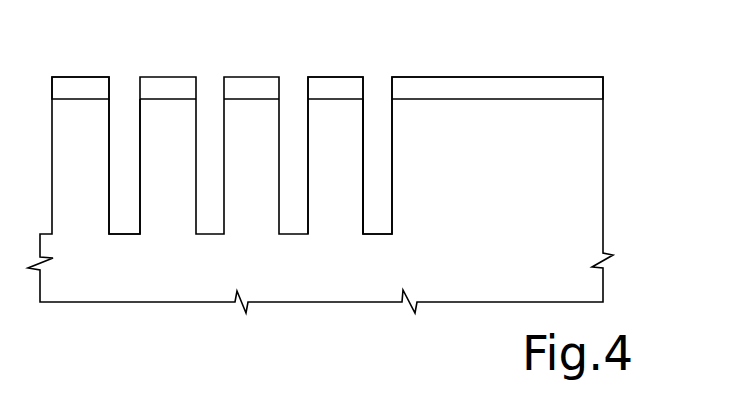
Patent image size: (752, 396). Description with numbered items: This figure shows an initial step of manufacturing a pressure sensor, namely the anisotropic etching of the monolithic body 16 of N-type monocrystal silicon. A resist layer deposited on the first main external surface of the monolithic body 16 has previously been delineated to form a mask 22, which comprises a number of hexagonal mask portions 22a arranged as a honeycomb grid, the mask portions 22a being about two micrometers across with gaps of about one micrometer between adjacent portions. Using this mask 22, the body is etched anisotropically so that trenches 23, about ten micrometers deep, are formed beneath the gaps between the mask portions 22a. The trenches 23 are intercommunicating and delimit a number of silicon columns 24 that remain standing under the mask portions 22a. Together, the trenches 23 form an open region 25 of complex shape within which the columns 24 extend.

The monolithic body 16 is at (555, 182).
The mask 22 is at (612, 90).
The mask portions 22a is at (73, 88).
The trenches 23 is at (131, 138).
The silicon columns 24 is at (318, 148).
The open region 25 is at (377, 90).